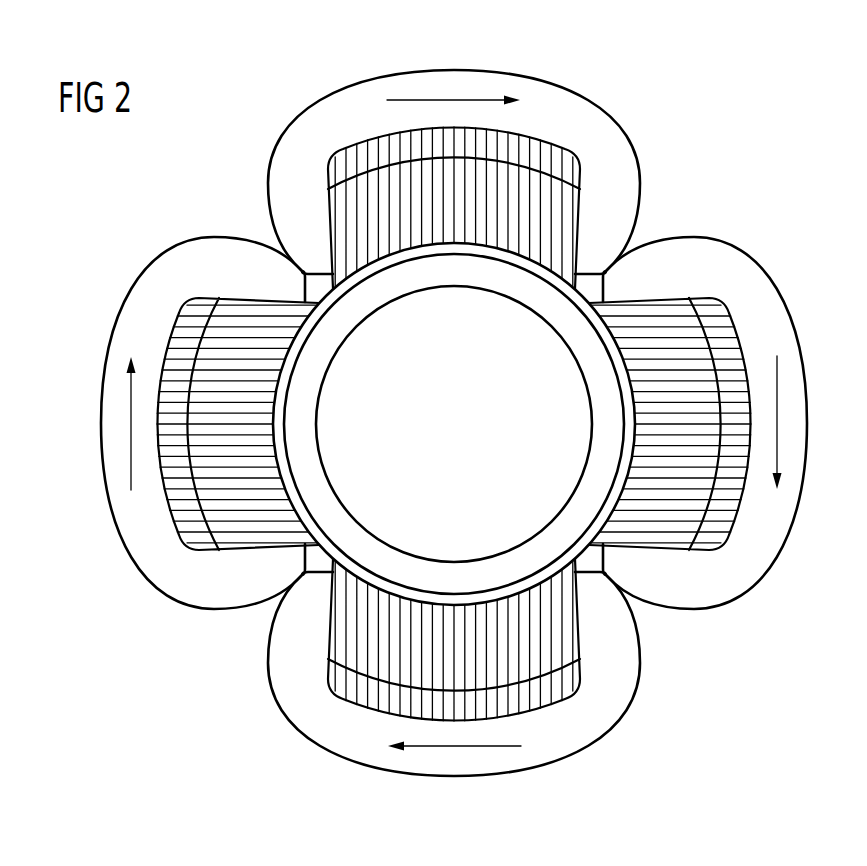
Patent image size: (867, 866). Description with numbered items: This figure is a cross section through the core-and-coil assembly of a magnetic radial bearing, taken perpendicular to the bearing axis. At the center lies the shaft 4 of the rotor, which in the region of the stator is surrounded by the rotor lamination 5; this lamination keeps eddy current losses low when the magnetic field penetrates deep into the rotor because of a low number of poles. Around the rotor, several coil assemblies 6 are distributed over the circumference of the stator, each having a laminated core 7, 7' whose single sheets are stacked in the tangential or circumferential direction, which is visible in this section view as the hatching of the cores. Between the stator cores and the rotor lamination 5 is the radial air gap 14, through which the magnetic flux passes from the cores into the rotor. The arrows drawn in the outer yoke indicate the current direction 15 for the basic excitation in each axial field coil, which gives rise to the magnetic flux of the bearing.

The shaft 4 is at (535, 505).
The rotor lamination 5 is at (555, 309).
The coil assembly 6 is at (266, 133).
The laminated core 7 is at (504, 208).
The laminated core 7' is at (507, 640).
The radial air gap 14 is at (623, 376).
The current direction 15 is at (462, 750).